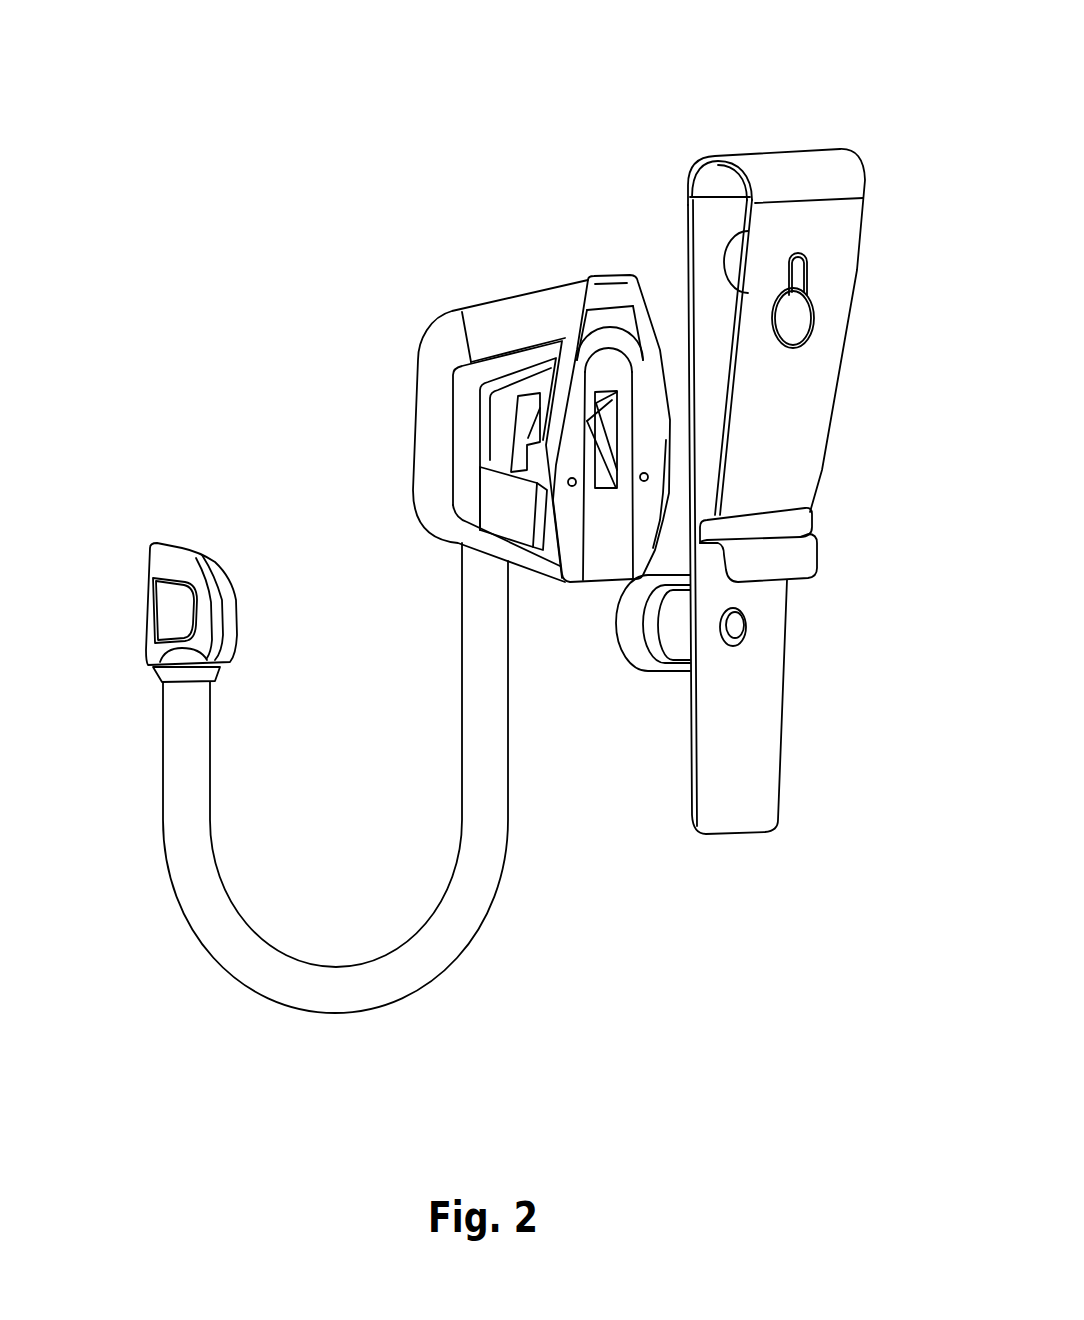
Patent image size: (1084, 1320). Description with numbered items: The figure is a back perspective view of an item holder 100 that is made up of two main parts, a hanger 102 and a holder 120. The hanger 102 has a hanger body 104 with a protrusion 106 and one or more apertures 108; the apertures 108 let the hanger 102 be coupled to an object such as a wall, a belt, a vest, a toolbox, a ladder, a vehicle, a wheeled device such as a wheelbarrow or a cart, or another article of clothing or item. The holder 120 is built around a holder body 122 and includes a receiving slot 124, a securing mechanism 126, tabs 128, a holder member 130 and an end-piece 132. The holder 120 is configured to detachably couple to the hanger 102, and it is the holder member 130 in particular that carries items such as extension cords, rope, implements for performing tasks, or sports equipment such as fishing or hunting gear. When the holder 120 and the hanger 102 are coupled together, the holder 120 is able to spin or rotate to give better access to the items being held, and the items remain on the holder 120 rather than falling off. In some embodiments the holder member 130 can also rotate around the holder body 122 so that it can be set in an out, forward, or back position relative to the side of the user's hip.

The item holder 100 is at (264, 38).
The hanger 102 is at (731, 878).
The hanger body 104 is at (820, 423).
The protrusion 106 is at (655, 672).
The apertures 108 is at (733, 240).
The holder 120 is at (282, 358).
The holder body 122 is at (523, 294).
The receiving slot 124 is at (612, 567).
The securing mechanism 126 is at (608, 415).
The tabs 128 is at (493, 510).
The holder member 130 is at (180, 897).
The end-piece 132 is at (184, 548).